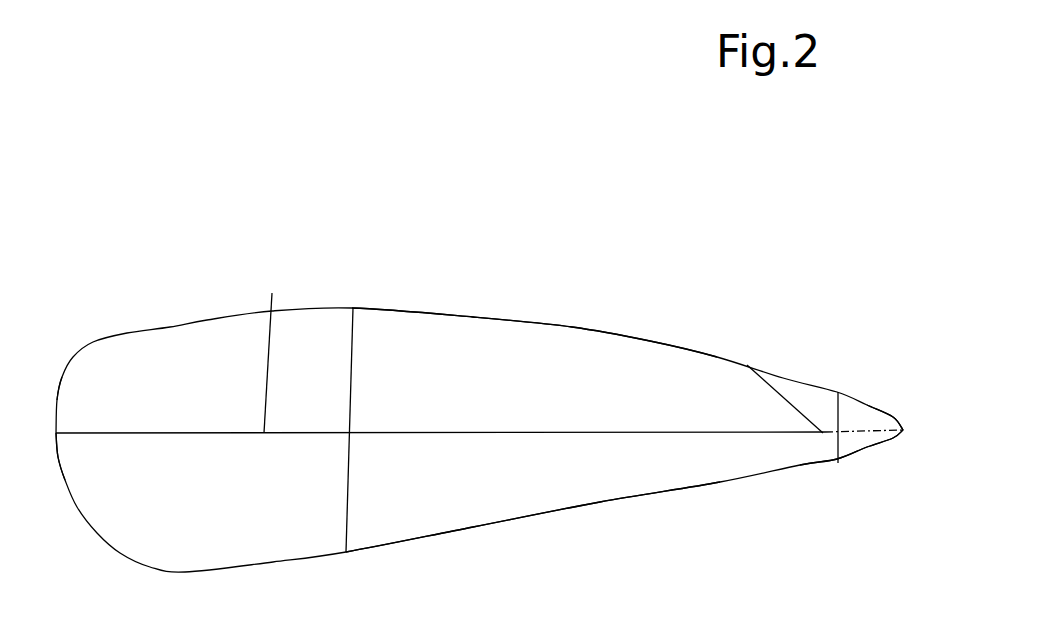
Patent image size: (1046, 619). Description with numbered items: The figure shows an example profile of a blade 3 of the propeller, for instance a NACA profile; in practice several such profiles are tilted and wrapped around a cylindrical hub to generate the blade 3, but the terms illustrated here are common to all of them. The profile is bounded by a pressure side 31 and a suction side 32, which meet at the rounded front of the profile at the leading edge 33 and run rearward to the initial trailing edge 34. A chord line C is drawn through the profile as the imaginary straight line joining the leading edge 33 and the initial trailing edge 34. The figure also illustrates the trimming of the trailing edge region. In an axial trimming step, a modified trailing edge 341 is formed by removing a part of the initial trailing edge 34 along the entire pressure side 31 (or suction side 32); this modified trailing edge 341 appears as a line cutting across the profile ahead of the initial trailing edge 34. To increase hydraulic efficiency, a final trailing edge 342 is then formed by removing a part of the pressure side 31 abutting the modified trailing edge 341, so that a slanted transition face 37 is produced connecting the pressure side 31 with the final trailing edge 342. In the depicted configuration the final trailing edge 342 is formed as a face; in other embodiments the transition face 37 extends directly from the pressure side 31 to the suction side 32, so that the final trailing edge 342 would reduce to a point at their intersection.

The blade 3 is at (497, 243).
The chord line C is at (272, 342).
The pressure side 31 is at (572, 326).
The suction side 32 is at (473, 527).
The leading edge 33 is at (56, 433).
The initial trailing edge 34 is at (905, 430).
The modified trailing edge 341 is at (840, 407).
The final trailing edge 342 is at (833, 458).
The transition face 37 is at (778, 393).